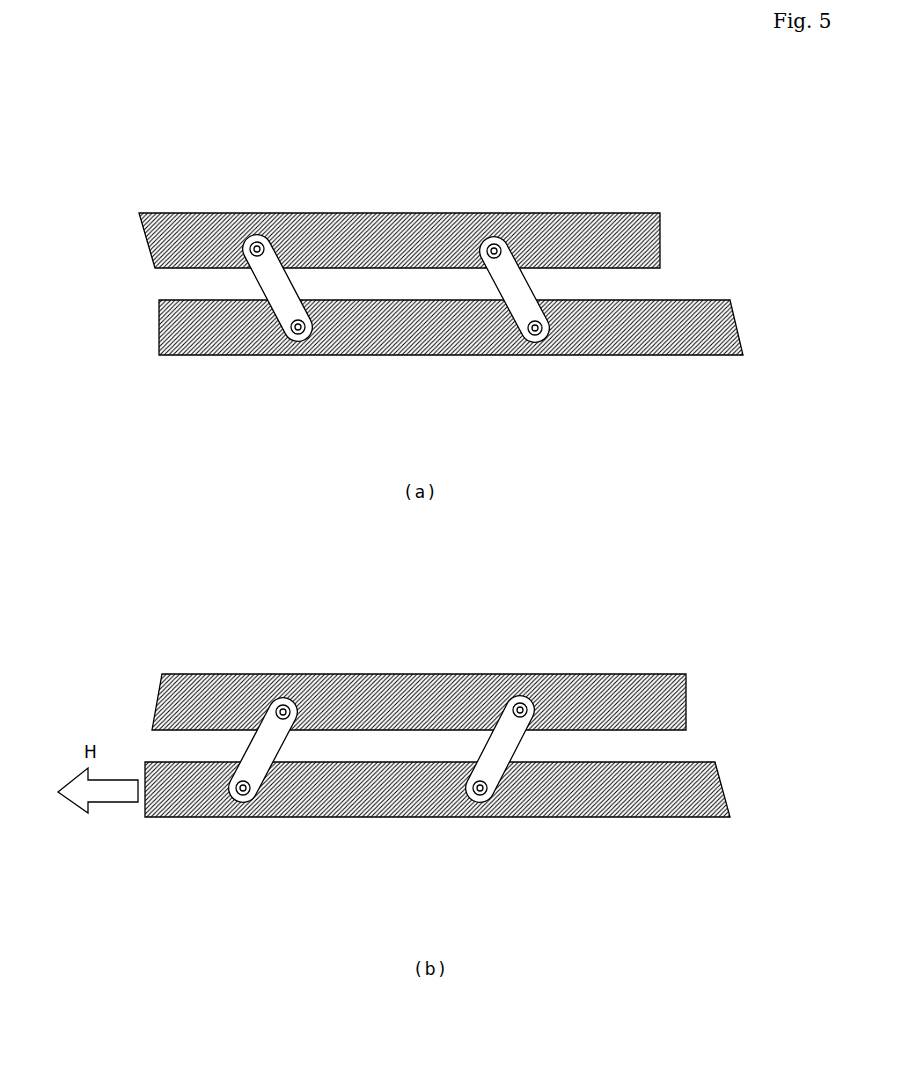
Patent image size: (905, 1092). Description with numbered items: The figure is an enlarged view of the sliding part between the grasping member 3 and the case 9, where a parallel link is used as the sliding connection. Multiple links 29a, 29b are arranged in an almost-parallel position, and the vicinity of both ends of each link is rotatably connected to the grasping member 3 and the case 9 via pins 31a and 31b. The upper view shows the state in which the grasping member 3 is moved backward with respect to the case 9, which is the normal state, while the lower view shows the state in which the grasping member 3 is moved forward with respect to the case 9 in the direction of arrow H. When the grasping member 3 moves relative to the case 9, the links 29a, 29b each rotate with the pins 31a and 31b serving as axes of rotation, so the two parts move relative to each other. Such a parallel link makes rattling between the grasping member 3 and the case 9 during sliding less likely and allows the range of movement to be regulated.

The grasping member 3 is at (350, 347).
The case 9 is at (507, 236).
The link 29a is at (540, 257).
The link 29b is at (292, 247).
The pin 31a is at (298, 336).
The pin 31b is at (254, 241).